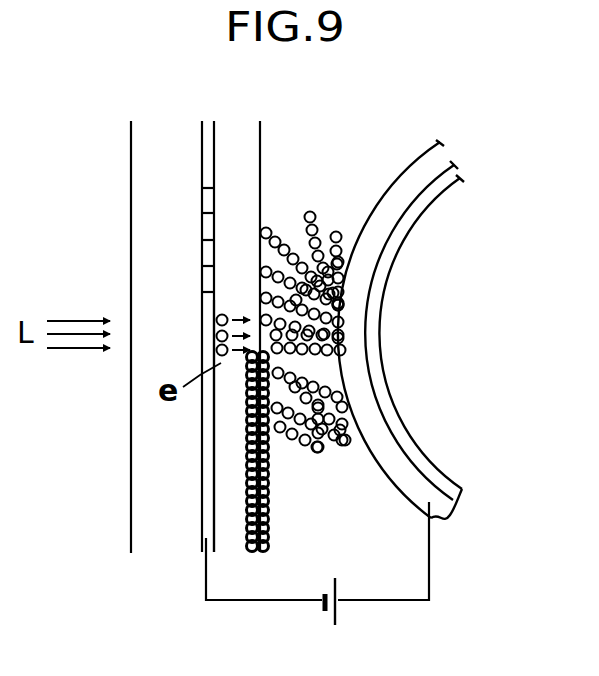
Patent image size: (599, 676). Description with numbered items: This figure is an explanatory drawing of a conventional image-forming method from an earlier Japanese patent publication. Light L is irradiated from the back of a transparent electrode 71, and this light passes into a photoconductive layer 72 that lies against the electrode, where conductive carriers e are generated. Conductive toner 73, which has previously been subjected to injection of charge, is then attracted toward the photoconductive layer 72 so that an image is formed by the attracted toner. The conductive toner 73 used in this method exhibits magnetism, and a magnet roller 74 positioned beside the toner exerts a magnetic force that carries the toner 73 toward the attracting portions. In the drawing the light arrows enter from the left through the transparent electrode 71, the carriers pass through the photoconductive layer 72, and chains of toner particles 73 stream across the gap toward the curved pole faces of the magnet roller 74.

The transparent electrode 71 is at (211, 140).
The photoconductive layer 72 is at (222, 505).
The conductive toner 73 is at (308, 214).
The magnet roller 74 is at (458, 172).